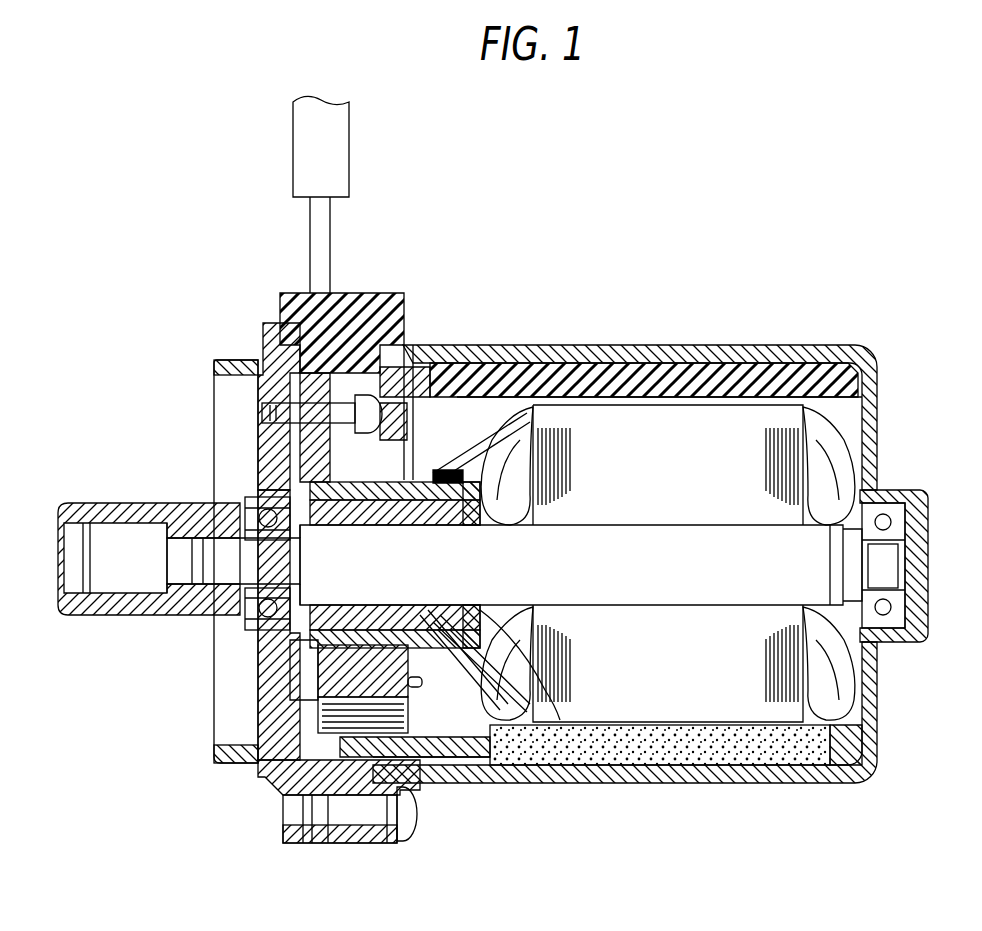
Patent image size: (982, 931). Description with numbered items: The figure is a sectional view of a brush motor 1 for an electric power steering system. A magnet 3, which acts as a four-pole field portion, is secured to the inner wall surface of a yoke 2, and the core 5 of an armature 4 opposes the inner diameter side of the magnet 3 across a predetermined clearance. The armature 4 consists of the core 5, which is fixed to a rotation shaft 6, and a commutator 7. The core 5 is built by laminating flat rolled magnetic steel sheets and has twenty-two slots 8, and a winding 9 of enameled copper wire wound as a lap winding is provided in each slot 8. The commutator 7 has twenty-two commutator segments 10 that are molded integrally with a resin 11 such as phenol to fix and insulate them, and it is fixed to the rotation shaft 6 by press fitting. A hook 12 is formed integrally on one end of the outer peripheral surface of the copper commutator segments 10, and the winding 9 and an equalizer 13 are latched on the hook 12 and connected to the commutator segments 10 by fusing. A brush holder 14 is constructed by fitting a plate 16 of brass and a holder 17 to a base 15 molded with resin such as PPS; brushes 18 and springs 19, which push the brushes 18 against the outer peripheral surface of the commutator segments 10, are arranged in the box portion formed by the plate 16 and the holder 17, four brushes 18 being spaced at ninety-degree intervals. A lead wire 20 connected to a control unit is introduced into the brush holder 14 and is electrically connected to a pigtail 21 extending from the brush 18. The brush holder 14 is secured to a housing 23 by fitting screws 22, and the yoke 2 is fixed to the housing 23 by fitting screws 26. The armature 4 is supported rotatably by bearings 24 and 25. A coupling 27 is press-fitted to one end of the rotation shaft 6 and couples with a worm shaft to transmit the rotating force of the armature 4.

The brush motor 1 is at (640, 280).
The yoke 2 is at (785, 347).
The magnet 3 is at (796, 764).
The armature 4 is at (706, 398).
The core 5 is at (662, 438).
The rotation shaft 6 is at (590, 568).
The commutator 7 is at (440, 475).
The slot 8 is at (808, 415).
The winding 9 is at (515, 430).
The commutator segments 10 is at (410, 462).
The resin 11 is at (258, 648).
The hook 12 is at (450, 480).
The equalizer 13 is at (555, 712).
The brush holder 14 is at (262, 768).
The base 15 is at (270, 712).
The plate 16 is at (290, 790).
The holder 17 is at (410, 700).
The brushes 18 is at (275, 672).
The springs 19 is at (445, 730).
The lead wire 20 is at (320, 238).
The pigtail 21 is at (418, 688).
The fitting screws 22 is at (285, 414).
The housing 23 is at (240, 368).
The bearing 24 is at (250, 495).
The bearing 25 is at (895, 622).
The fitting screws 26 is at (358, 835).
The coupling 27 is at (90, 506).